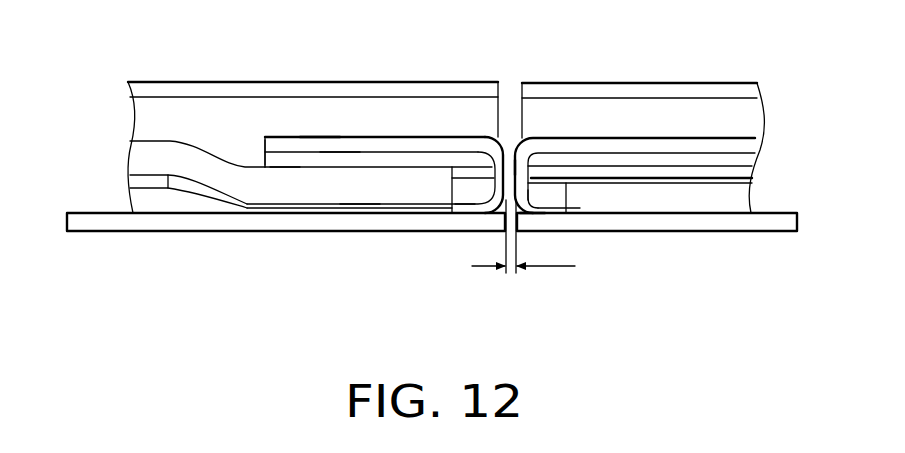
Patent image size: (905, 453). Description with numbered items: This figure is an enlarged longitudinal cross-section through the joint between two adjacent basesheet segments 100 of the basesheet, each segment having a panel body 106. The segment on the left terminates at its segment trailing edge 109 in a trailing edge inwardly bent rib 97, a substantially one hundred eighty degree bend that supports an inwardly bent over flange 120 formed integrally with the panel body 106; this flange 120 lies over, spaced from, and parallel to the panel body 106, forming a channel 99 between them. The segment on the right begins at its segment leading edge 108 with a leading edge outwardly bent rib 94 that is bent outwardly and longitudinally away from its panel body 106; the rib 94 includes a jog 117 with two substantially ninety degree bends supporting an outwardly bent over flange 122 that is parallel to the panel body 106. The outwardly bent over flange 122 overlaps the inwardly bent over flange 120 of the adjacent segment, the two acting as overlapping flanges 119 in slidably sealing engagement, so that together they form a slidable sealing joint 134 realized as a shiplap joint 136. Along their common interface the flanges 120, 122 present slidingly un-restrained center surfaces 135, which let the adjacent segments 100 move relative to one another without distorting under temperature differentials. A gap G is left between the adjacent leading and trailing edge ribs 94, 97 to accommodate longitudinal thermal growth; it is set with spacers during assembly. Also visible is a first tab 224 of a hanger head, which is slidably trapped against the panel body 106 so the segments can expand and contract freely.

The leading edge outwardly bent rib 94 is at (533, 188).
The trailing edge inwardly bent rib 97 is at (520, 166).
The channel 99 is at (463, 205).
The basesheet segment 100 is at (279, 232).
The panel body 106 is at (110, 212).
The segment leading edge 108 is at (533, 222).
The segment trailing edge 109 is at (478, 212).
The jog 117 is at (338, 153).
The overlapping flange 119 is at (300, 133).
The inwardly bent over flange 120 is at (287, 168).
The outwardly bent over flange 122 is at (338, 137).
The slidable sealing joint 134 is at (260, 148).
The slidingly un-restrained center surface 135 is at (396, 160).
The shiplap joint 136 is at (457, 128).
The first tab 224 is at (360, 196).
The gap G is at (558, 268).